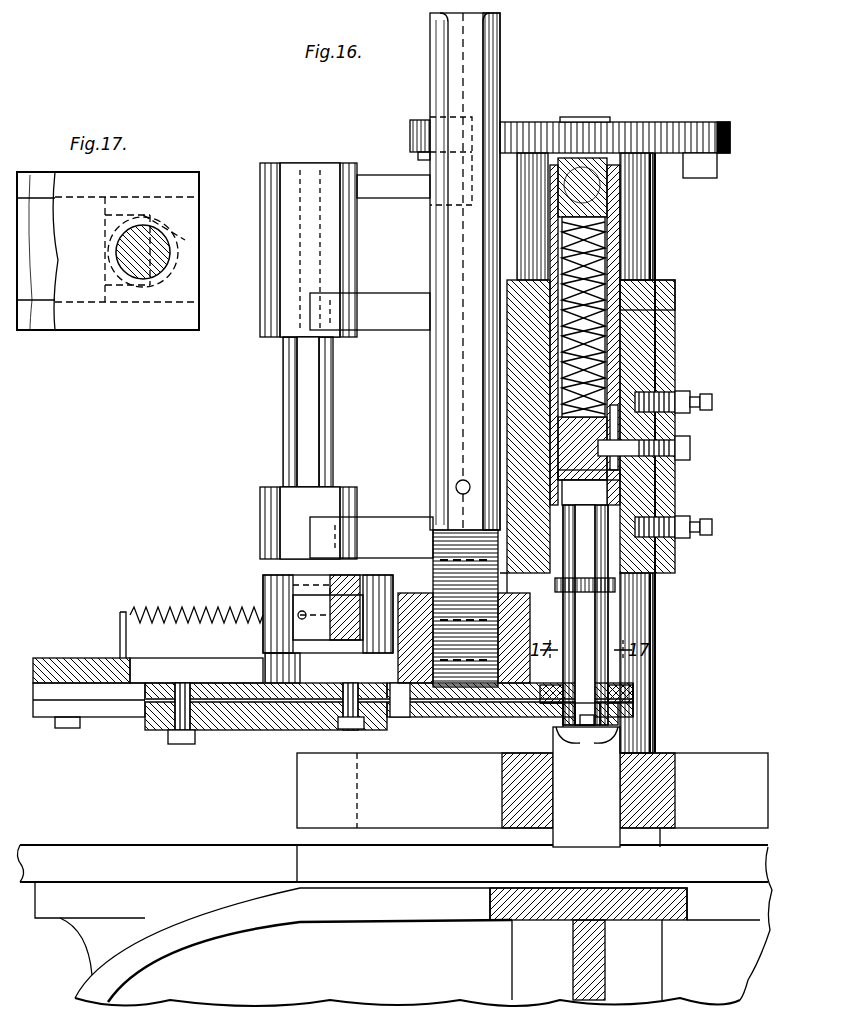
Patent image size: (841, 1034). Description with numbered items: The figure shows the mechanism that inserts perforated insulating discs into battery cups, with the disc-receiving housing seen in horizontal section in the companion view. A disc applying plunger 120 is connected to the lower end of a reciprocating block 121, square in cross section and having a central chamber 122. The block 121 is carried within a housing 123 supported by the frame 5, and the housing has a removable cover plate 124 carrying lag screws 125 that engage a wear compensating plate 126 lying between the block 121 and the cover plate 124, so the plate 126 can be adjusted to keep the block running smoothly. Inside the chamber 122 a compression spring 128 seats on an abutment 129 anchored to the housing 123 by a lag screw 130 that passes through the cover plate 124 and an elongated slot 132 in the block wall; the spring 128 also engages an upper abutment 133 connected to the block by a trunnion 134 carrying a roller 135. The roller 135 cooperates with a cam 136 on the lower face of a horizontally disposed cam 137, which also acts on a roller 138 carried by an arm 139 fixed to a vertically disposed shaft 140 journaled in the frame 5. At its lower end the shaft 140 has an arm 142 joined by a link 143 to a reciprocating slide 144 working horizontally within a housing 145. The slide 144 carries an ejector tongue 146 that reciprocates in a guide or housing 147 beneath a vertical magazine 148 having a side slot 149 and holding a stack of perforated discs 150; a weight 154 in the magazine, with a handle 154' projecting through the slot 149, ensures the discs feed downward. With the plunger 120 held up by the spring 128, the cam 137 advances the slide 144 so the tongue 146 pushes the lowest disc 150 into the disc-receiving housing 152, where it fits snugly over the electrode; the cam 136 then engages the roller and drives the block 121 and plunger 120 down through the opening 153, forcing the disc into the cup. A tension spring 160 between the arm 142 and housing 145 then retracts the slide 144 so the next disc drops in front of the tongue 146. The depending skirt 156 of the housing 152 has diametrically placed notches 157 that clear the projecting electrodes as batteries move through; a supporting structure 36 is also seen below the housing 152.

In FIG. 16, the frame 5 is at (258, 985).
In FIG. 16, the support column 36 is at (532, 787).
In FIG. 16, the disc applying plunger 120 is at (600, 628).
In FIG. 17, the disc applying plunger 120 is at (150, 247).
In FIG. 16, the reciprocating block 121 is at (605, 275).
In FIG. 16, the central chamber 122 is at (612, 250).
In FIG. 16, the housing 123 is at (522, 300).
In FIG. 16, the removable cover plate 124 is at (665, 362).
In FIG. 16, the lag screws 125 is at (700, 400).
In FIG. 16, the wear compensating plate 126 is at (635, 340).
In FIG. 16, the compression spring 128 is at (620, 280).
In FIG. 16, the abutment 129 is at (600, 476).
In FIG. 16, the lag screw 130 is at (690, 448).
In FIG. 16, the elongated slot 132 is at (620, 430).
In FIG. 16, the abutment 133 is at (590, 200).
In FIG. 16, the trunnion 134 is at (655, 210).
In FIG. 16, the roller 135 is at (600, 150).
In FIG. 16, the cam 136 is at (712, 172).
In FIG. 16, the horizontally disposed cam 137 is at (730, 134).
In FIG. 16, the roller 138 is at (410, 128).
In FIG. 16, the arm 139 is at (395, 196).
In FIG. 16, the vertically disposed shaft 140 is at (283, 400).
In FIG. 16, the arm 142 is at (357, 600).
In FIG. 16, the link 143 is at (318, 602).
In FIG. 16, the reciprocating slide 144 is at (205, 683).
In FIG. 16, the housing 145 is at (76, 658).
In FIG. 16, the ejector tongue 146 is at (395, 717).
In FIG. 17, the ejector tongue 146 is at (45, 290).
In FIG. 16, the guide or housing 147 is at (478, 705).
In FIG. 16, the magazine 148 is at (490, 98).
In FIG. 16, the elongated slot or opening 149 is at (470, 60).
In FIG. 16, the perforated discs 150 is at (433, 578).
In FIG. 16, the disc-receiving housing 152 is at (625, 698).
In FIG. 17, the disc-receiving housing 152 is at (178, 320).
In FIG. 16, the opening 153 is at (556, 712).
In FIG. 16, the weight 154 is at (424, 412).
In FIG. 16, the handle or extension 154' is at (423, 465).
In FIG. 16, the depending skirt 156 is at (618, 710).
In FIG. 17, the depending skirt 156 is at (175, 208).
In FIG. 16, the notches or openings 157 is at (587, 746).
In FIG. 17, the notches or openings 157 is at (112, 248).
In FIG. 16, the tension spring 160 is at (191, 632).